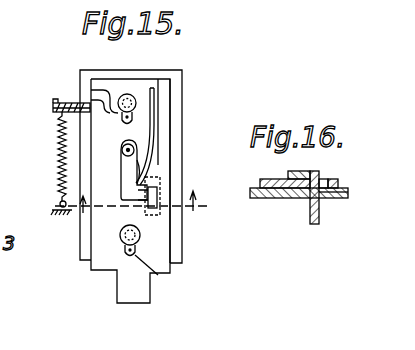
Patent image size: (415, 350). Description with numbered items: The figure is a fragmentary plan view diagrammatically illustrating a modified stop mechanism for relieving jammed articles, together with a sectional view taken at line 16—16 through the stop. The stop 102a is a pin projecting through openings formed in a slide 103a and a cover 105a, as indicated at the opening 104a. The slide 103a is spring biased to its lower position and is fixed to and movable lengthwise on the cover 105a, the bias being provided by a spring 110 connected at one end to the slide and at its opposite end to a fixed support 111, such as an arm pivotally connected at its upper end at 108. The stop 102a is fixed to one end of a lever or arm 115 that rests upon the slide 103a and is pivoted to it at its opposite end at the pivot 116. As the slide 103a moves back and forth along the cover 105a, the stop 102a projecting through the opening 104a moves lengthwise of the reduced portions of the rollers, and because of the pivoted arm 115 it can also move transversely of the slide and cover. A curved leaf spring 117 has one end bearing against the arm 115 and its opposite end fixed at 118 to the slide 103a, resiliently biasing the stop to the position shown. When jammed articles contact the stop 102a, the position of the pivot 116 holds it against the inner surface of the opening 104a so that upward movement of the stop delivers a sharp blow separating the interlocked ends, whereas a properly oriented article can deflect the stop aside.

In FIG. 15, the stop 102a is at (152, 192).
In FIG. 16, the stop 102a is at (320, 218).
In FIG. 15, the slide 103a is at (161, 85).
In FIG. 16, the slide 103a is at (275, 170).
In FIG. 15, the opening 104a is at (155, 205).
In FIG. 16, the opening 104a is at (322, 193).
In FIG. 15, the cover 105a is at (182, 98).
In FIG. 16, the cover 105a is at (340, 187).
In FIG. 15, the pivotal connection 108 is at (55, 104).
In FIG. 15, the spring 110 is at (60, 130).
In FIG. 15, the fixed support 111 is at (55, 210).
In FIG. 15, the lever or arm 115 is at (125, 162).
In FIG. 16, the lever or arm 115 is at (300, 176).
In FIG. 15, the pivot 116 is at (122, 151).
In FIG. 15, the curved leaf spring 117 is at (145, 158).
In FIG. 15, the fixed end of leaf spring 118 is at (150, 86).
In FIG. 15, the section line 16- 16 is at (205, 205).